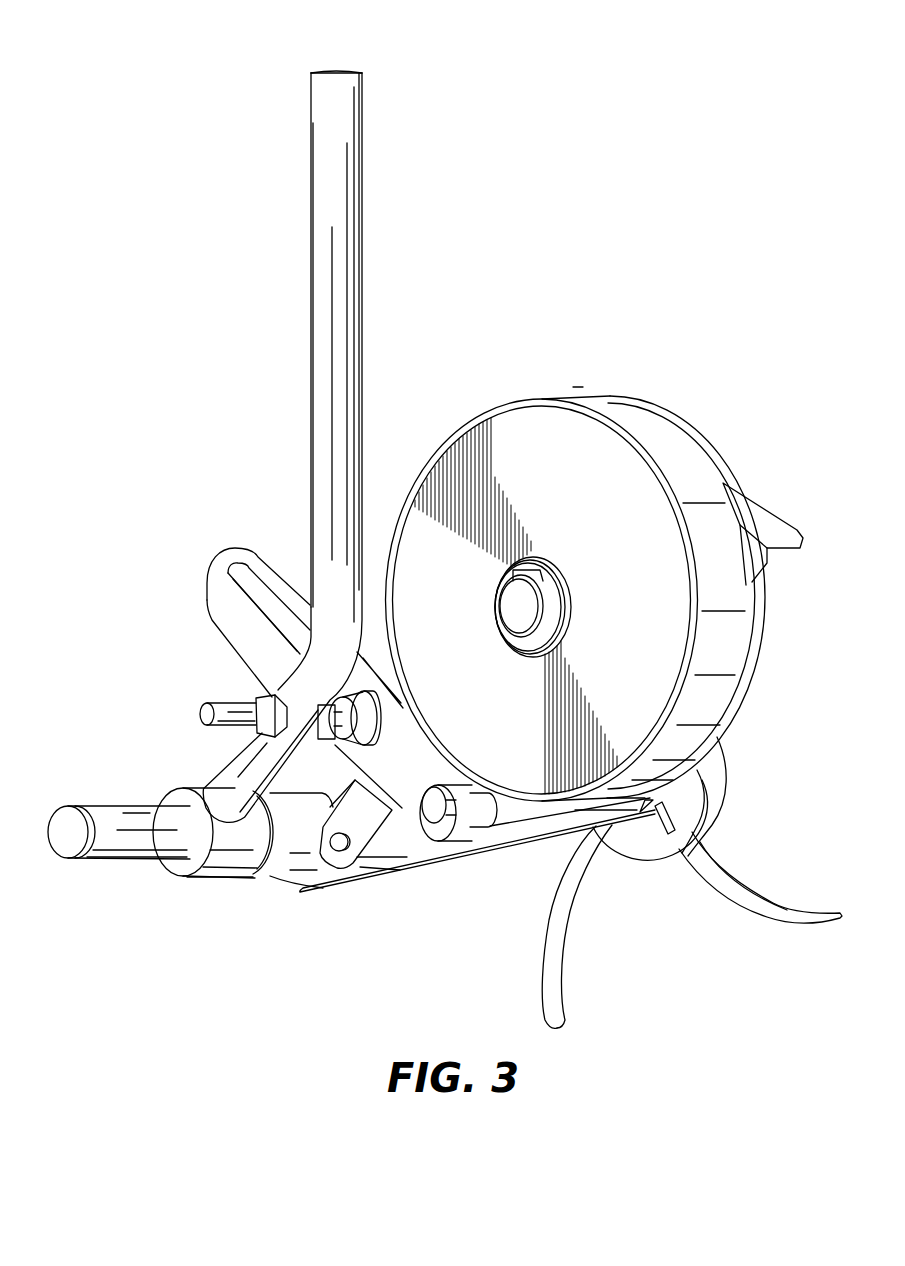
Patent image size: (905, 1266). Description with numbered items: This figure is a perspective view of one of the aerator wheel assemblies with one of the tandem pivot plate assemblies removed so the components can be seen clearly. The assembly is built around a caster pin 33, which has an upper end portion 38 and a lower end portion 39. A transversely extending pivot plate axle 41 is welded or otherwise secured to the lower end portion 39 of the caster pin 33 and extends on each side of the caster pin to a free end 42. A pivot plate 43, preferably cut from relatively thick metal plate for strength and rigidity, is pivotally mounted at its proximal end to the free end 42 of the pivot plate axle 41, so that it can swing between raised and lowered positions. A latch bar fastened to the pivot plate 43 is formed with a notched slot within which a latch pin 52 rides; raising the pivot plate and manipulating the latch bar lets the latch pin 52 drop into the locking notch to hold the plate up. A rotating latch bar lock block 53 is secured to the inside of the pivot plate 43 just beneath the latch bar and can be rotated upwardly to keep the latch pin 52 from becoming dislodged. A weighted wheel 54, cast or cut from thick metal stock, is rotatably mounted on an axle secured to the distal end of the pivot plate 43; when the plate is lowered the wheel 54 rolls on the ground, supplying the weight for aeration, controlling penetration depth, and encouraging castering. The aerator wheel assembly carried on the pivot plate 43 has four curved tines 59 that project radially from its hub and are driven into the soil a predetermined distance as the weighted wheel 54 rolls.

The upper end portion 38 is at (397, 99).
The caster pin 33 is at (352, 273).
The weighted wheel 54 is at (528, 434).
The latch pin 52 is at (228, 712).
The lower end portion 39 is at (171, 761).
The free end 42 is at (68, 840).
The pivot plate axle 41 is at (158, 879).
The latch bar lock block 53 is at (387, 846).
The pivot plate 43 is at (535, 838).
The curved tines 59 is at (747, 888).